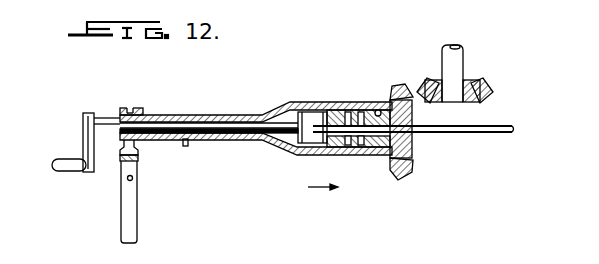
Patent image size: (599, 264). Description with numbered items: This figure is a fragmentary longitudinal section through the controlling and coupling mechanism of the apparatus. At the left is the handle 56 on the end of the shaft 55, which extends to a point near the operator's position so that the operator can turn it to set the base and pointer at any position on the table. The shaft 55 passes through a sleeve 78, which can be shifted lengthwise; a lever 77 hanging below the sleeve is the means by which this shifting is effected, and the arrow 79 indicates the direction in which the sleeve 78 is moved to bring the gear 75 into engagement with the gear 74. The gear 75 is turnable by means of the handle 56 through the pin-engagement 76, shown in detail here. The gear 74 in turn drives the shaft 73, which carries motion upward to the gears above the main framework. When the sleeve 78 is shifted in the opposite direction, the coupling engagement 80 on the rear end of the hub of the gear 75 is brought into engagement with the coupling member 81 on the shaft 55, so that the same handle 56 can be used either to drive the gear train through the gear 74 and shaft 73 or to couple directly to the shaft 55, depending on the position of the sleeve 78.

The shaft 55 is at (463, 134).
The handle 56 is at (58, 161).
The shaft 73 is at (463, 60).
The gear 74 is at (481, 83).
The gear 75 is at (407, 176).
The pin-engagement 76 is at (186, 146).
The lever 77 is at (134, 211).
The sleeve 78 is at (236, 141).
The arrow 79 is at (318, 192).
The coupling engagement 80 is at (365, 117).
The coupling member 81 is at (336, 117).